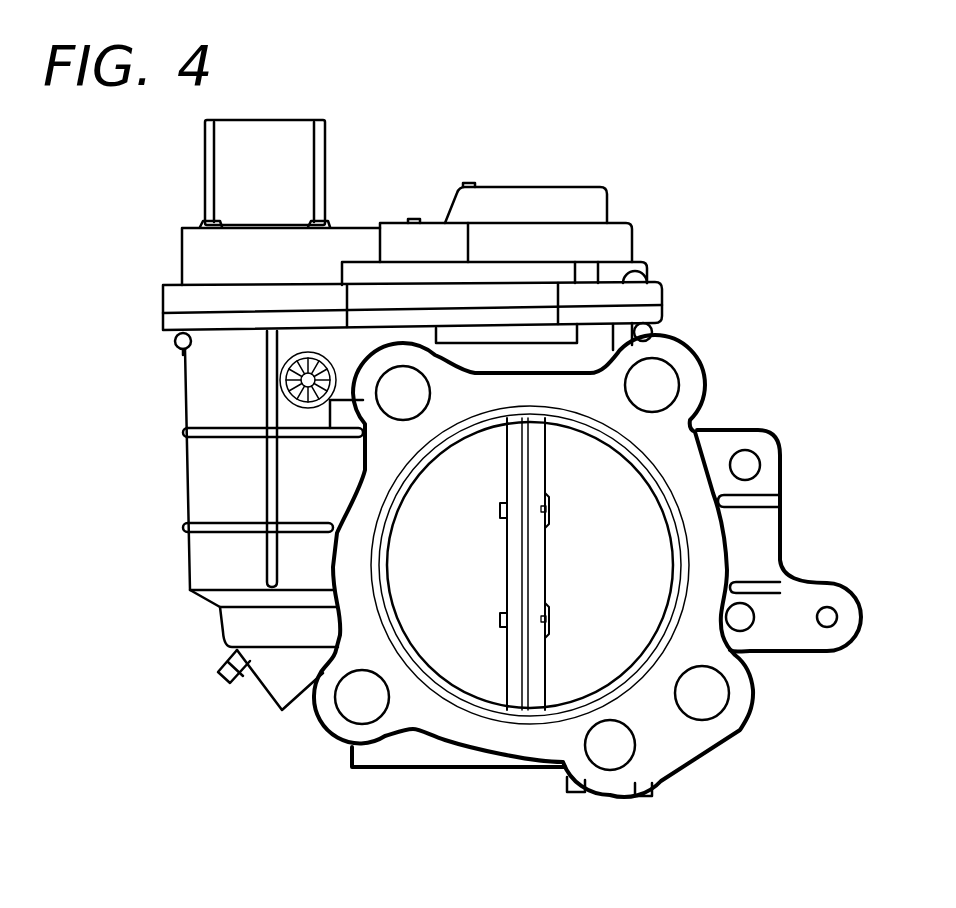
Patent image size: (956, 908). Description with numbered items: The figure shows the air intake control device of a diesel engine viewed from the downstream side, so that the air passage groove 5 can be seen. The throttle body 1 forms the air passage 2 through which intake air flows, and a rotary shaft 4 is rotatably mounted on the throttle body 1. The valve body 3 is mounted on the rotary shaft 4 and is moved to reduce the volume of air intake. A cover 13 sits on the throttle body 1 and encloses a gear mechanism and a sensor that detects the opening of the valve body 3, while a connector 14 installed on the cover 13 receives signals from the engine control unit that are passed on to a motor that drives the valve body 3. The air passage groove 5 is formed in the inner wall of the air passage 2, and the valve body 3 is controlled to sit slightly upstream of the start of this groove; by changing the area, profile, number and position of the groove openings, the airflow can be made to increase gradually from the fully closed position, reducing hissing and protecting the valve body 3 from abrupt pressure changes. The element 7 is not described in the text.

The throttle body 1 is at (755, 527).
The air passage 2 is at (488, 450).
The valve body 3 is at (527, 467).
The rotary shaft 4 is at (548, 674).
The air passage groove 5 is at (407, 447).
The drain nozzle 7 is at (352, 572).
The cover 13 is at (230, 262).
The connector 14 is at (245, 172).